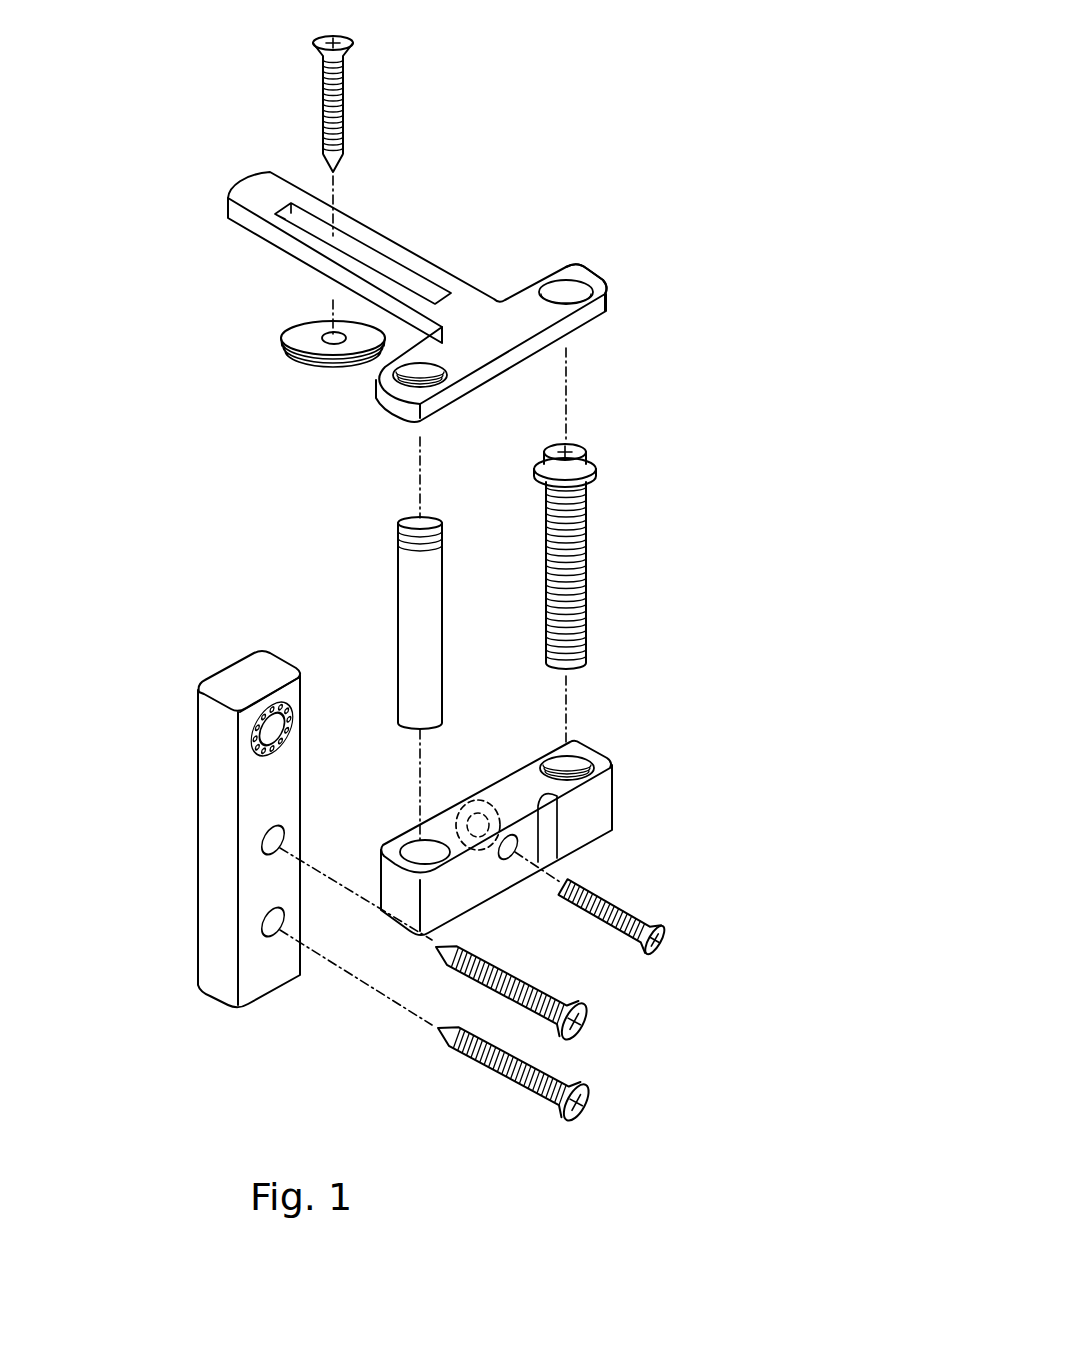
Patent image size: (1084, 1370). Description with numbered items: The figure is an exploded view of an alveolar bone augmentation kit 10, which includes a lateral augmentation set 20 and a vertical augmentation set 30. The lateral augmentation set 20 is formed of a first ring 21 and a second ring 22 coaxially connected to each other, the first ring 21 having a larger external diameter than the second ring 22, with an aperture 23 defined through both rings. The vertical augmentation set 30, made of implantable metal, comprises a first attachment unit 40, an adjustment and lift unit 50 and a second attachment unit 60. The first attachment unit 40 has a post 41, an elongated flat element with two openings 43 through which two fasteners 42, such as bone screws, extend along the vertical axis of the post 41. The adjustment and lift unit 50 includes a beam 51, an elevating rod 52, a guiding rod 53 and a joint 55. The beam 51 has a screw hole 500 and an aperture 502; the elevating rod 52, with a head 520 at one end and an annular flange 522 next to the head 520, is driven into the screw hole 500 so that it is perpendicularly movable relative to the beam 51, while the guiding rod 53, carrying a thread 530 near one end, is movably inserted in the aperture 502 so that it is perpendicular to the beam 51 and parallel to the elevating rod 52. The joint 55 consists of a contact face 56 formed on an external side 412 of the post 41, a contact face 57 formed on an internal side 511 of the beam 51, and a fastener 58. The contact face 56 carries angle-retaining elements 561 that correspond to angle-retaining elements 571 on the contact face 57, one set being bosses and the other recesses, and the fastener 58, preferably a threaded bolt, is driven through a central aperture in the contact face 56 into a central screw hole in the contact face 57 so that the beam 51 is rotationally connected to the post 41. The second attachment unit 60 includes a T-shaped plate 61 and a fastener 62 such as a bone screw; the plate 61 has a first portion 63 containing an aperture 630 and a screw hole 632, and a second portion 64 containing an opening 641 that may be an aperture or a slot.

The alveolar bone augmentation kit 10 is at (715, 60).
The lateral augmentation set 20 is at (278, 333).
The first ring 21 is at (300, 340).
The second ring 22 is at (303, 372).
The aperture 23 is at (330, 335).
The vertical augmentation set 30 is at (637, 588).
The first attachment unit 40 is at (230, 643).
The post 41 is at (223, 780).
The external side 412 is at (287, 785).
The fastener 42 is at (597, 1025).
The opening 43 is at (263, 840).
The adjustment and lift unit 50 is at (599, 734).
The screw hole 500 is at (594, 755).
The aperture 502 is at (428, 855).
The beam 51 is at (589, 819).
The internal side 511 is at (513, 757).
The elevating rod 52 is at (525, 538).
The head 520 is at (573, 446).
The annular flange 522 is at (597, 468).
The guiding rod 53 is at (397, 595).
The thread 530 is at (397, 545).
The joint 55 is at (293, 707).
The contact face 56 is at (295, 729).
The angle-retaining elements 561 is at (255, 727).
The contact face 57 is at (479, 790).
The angle-retaining elements 571 is at (455, 824).
The fastener 58 is at (653, 962).
The second attachment unit 60 is at (481, 135).
The plate 61 is at (585, 265).
The fastener 62 is at (323, 118).
The first portion 63 is at (595, 312).
The aperture 630 is at (565, 290).
The screw hole 632 is at (396, 384).
The second portion 64 is at (375, 229).
The opening 641 is at (280, 206).